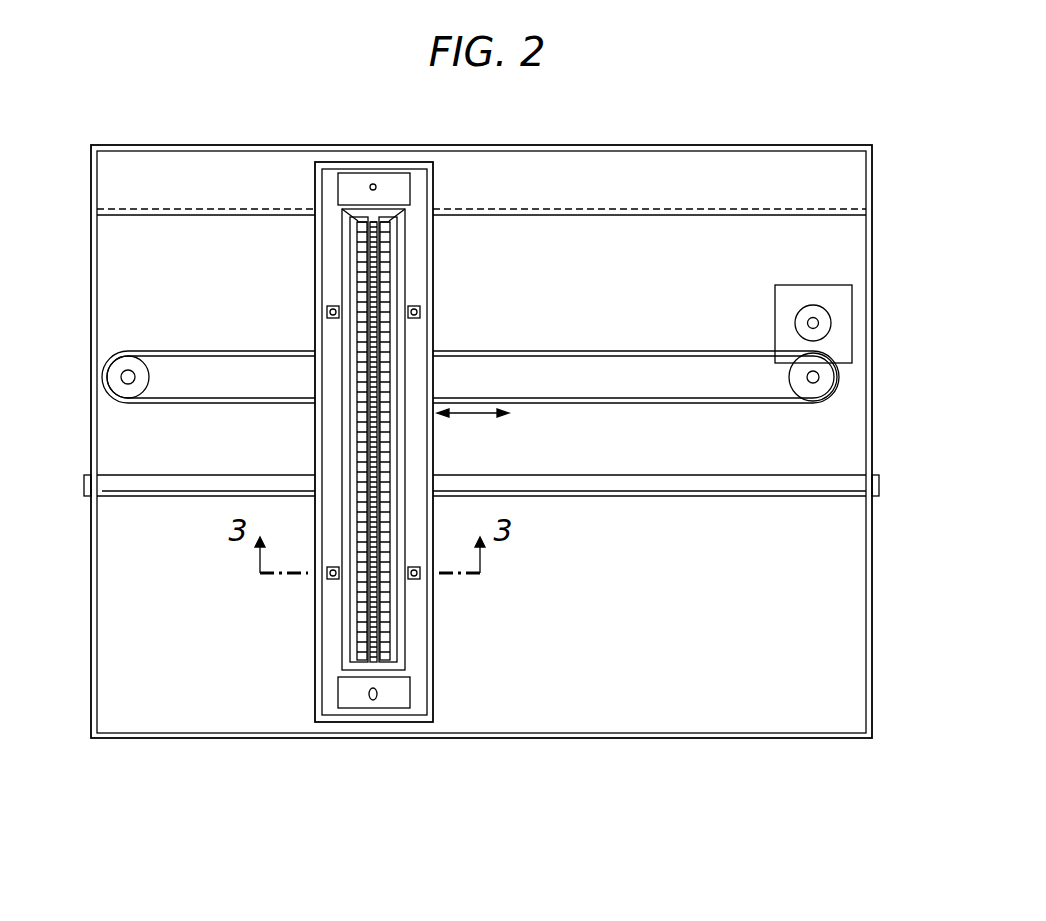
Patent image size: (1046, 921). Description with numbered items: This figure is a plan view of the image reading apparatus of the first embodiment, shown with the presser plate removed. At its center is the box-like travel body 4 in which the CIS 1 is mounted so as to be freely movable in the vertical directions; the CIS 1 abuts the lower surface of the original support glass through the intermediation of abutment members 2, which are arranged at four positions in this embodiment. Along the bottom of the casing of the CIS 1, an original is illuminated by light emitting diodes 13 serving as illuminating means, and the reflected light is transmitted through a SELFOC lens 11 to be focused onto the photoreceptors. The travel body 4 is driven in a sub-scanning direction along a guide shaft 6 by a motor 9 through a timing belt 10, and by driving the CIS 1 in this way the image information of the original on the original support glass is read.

The CIS 1 is at (386, 703).
The abutment members 2 is at (328, 307).
The travel body 4 is at (334, 722).
The guide shaft 6 is at (797, 492).
The motor 9 is at (852, 305).
The timing belt 10 is at (730, 404).
The SELFOC lens 11 is at (373, 222).
The light emitting diodes 13 is at (362, 221).